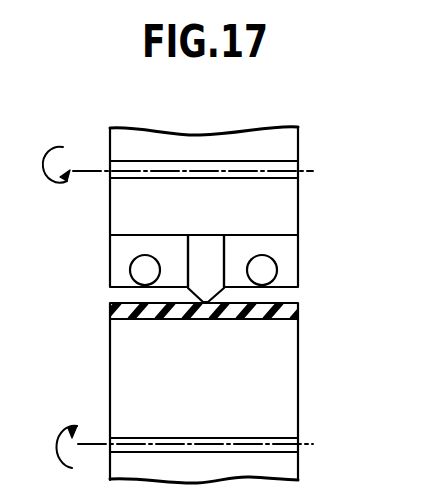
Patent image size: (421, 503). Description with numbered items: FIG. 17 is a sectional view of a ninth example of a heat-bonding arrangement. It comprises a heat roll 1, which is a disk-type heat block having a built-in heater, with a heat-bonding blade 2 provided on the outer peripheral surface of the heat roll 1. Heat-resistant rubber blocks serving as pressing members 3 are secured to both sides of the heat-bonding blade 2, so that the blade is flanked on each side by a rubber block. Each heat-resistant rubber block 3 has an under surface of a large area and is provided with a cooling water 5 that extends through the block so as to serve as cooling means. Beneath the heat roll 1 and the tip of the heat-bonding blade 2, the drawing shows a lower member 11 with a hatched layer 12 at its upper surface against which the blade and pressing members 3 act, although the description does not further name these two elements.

The heat roll 1 is at (283, 203).
The heat-bonding blade 2 is at (203, 305).
The pressing members 3 is at (288, 251).
The cooling water 5 is at (143, 269).
The lower member 11 is at (285, 398).
The workpiece layer 12 is at (298, 318).